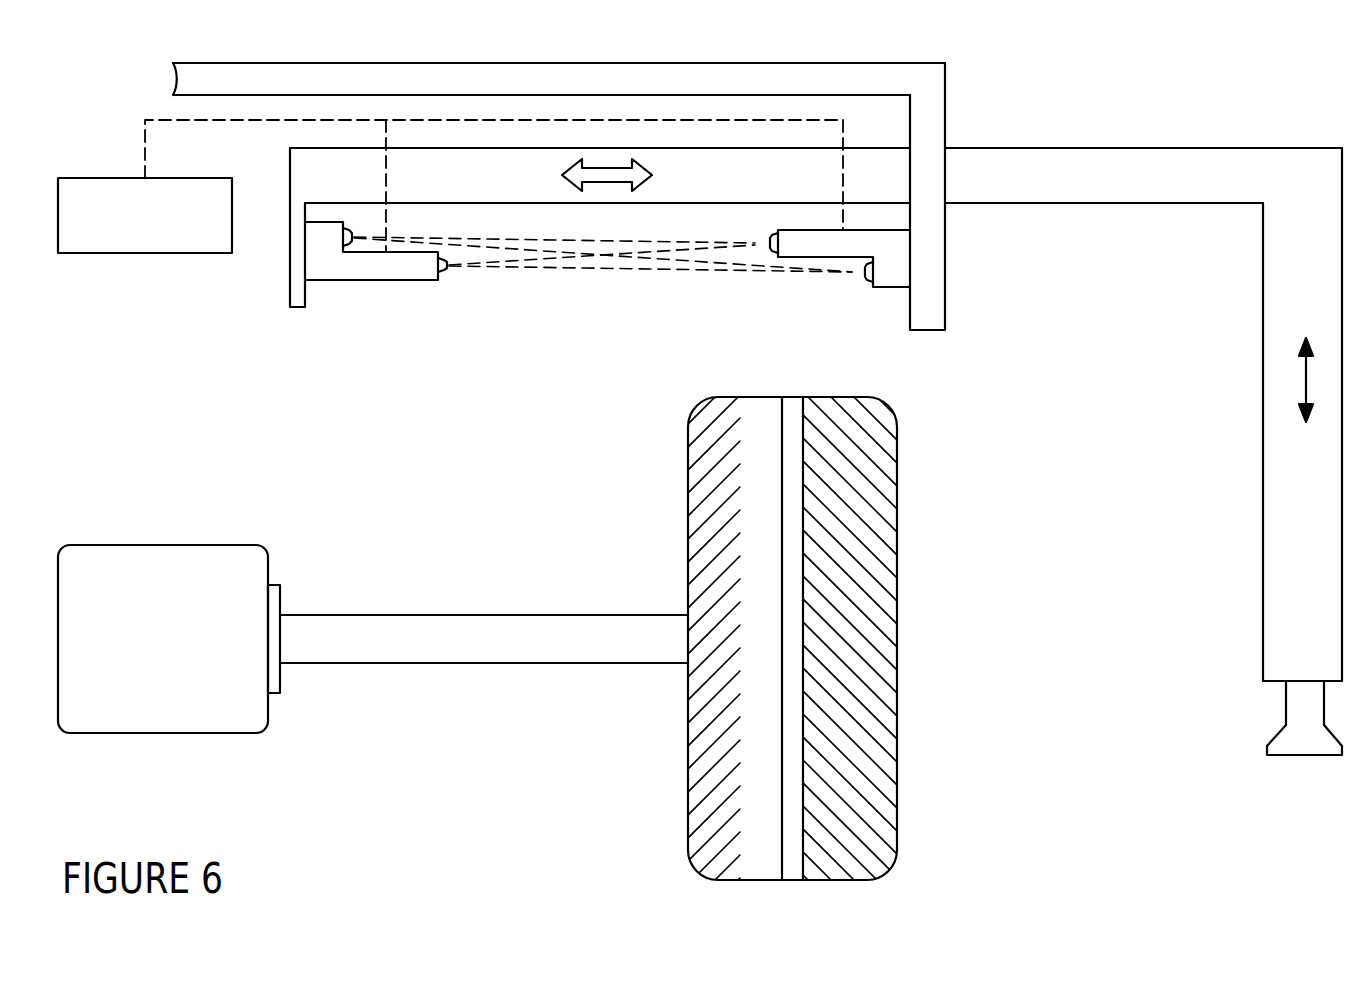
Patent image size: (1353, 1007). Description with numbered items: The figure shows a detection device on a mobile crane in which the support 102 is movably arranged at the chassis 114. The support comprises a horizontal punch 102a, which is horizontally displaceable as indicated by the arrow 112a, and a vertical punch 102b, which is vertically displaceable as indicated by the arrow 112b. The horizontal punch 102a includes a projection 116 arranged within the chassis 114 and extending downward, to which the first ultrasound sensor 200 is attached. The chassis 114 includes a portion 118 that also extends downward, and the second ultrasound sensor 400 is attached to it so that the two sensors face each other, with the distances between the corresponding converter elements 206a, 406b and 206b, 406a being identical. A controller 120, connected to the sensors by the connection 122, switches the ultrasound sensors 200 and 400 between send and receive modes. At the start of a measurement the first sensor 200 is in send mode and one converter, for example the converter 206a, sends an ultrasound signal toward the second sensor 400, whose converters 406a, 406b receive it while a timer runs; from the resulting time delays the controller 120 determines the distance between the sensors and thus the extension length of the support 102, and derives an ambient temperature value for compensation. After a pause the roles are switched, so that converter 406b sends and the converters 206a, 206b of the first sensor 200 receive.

The support 102 is at (816, 414).
The horizontal punch 102a is at (1140, 165).
The vertical punch 102b is at (1285, 512).
The arrow 112a is at (605, 165).
The arrow 112b is at (1300, 376).
The chassis 114 is at (778, 80).
The projection 116 is at (288, 287).
The portion 118 is at (933, 268).
The controller 120 is at (145, 255).
The control connection 122 is at (145, 135).
The first ultrasound sensor 200 is at (396, 295).
The ultrasound converter 206a is at (354, 250).
The ultrasound converter 206b is at (447, 273).
The second ultrasound sensor 400 is at (830, 307).
The ultrasound converter 406a is at (862, 285).
The ultrasound converter 406b is at (774, 256).